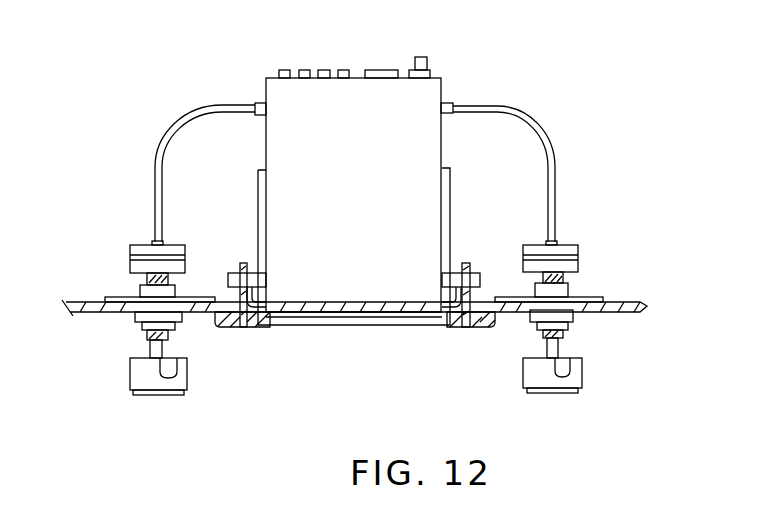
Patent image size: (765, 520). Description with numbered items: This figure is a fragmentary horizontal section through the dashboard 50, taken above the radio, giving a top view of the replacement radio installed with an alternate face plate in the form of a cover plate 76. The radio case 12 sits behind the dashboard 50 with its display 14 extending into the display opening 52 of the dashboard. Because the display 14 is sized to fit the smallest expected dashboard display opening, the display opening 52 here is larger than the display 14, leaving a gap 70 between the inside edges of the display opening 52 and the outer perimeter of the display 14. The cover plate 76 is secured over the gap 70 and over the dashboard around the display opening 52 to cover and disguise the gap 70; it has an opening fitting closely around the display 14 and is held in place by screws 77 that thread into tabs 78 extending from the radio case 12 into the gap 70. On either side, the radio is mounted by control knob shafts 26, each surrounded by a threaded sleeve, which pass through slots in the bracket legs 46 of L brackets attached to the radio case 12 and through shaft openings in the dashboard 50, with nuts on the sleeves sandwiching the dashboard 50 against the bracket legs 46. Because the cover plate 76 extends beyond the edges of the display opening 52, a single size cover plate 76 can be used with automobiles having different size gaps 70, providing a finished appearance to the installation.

The radio case 12 is at (278, 92).
The display 14 is at (363, 316).
The control knob shaft 26 is at (147, 348).
The bracket leg 46 is at (118, 298).
The dashboard 50 is at (93, 313).
The display opening 52 is at (227, 307).
The gap 70 is at (262, 305).
The cover plate 76 is at (325, 323).
The screw 77 is at (245, 328).
The tab 78 is at (264, 279).